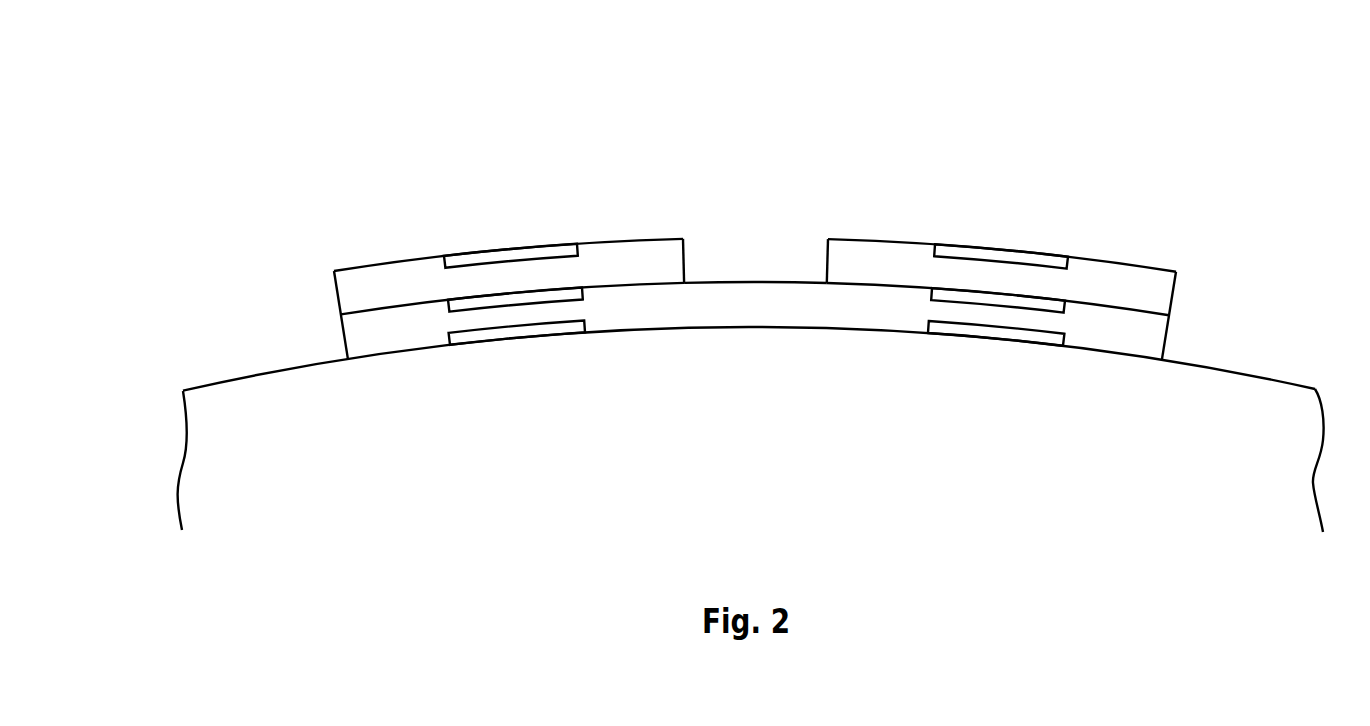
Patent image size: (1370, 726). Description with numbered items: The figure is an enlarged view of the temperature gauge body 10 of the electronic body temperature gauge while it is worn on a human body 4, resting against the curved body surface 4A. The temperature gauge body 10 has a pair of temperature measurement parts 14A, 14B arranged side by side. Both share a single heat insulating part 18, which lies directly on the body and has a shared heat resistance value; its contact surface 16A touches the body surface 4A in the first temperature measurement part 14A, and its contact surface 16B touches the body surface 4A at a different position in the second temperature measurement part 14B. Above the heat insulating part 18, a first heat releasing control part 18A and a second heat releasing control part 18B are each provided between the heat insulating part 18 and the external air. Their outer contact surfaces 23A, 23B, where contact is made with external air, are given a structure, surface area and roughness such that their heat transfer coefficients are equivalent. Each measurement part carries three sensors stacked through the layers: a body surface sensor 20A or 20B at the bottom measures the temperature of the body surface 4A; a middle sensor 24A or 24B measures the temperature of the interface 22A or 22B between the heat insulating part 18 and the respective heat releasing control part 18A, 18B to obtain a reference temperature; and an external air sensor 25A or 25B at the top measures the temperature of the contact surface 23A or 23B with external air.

The temperature gauge body 10 is at (766, 106).
The human body 4 is at (1283, 348).
The body surface 4A is at (1230, 367).
The heat insulating part 18 is at (765, 315).
The temperature measurement part 14A is at (522, 190).
The temperature measurement part 14B is at (1002, 175).
The contact surface 16A is at (473, 345).
The contact surface 16B is at (1043, 343).
The first heat releasing control part 18A is at (612, 255).
The second heat releasing control part 18B is at (927, 262).
The body surface sensor 20A is at (542, 330).
The body surface sensor 20B is at (963, 327).
The interface 22A is at (433, 300).
The interface 22B is at (1097, 302).
The contact surface 23A is at (375, 265).
The contact surface 23B is at (873, 237).
The middle sensor 24A is at (555, 300).
The middle sensor 24B is at (963, 298).
The external air sensor 25A is at (465, 260).
The external air sensor 25B is at (1050, 263).